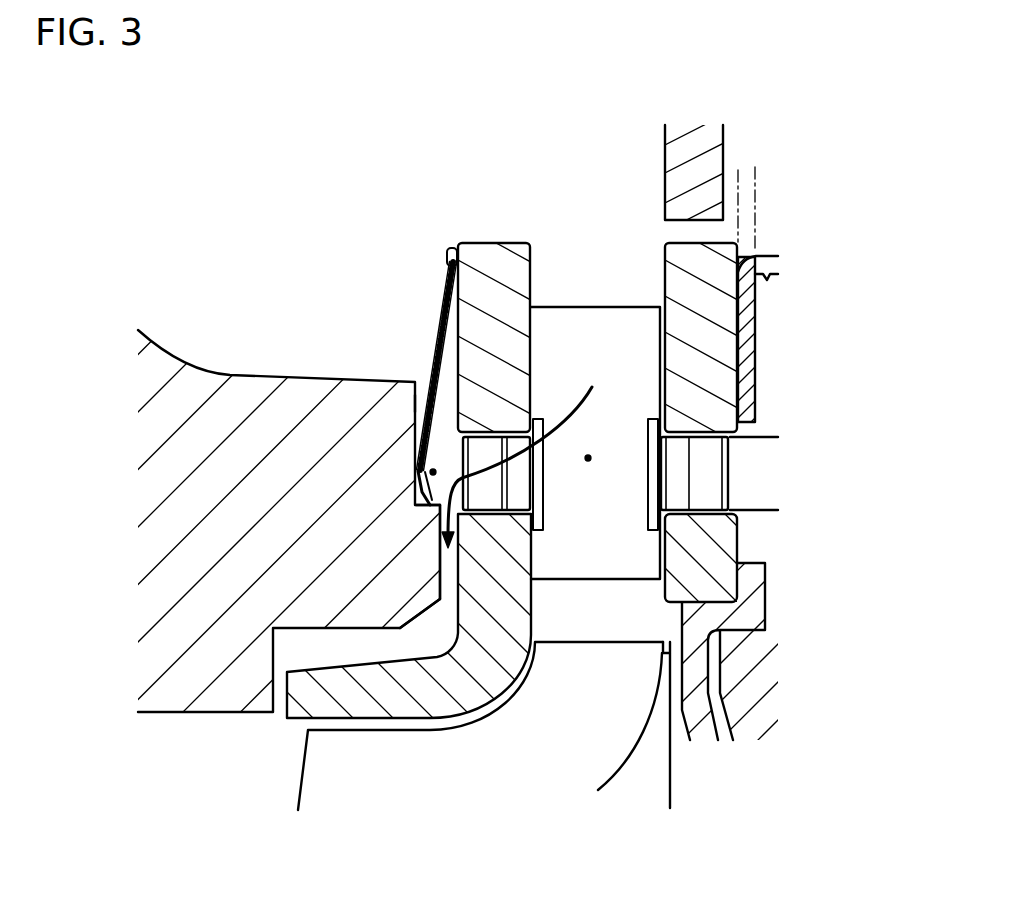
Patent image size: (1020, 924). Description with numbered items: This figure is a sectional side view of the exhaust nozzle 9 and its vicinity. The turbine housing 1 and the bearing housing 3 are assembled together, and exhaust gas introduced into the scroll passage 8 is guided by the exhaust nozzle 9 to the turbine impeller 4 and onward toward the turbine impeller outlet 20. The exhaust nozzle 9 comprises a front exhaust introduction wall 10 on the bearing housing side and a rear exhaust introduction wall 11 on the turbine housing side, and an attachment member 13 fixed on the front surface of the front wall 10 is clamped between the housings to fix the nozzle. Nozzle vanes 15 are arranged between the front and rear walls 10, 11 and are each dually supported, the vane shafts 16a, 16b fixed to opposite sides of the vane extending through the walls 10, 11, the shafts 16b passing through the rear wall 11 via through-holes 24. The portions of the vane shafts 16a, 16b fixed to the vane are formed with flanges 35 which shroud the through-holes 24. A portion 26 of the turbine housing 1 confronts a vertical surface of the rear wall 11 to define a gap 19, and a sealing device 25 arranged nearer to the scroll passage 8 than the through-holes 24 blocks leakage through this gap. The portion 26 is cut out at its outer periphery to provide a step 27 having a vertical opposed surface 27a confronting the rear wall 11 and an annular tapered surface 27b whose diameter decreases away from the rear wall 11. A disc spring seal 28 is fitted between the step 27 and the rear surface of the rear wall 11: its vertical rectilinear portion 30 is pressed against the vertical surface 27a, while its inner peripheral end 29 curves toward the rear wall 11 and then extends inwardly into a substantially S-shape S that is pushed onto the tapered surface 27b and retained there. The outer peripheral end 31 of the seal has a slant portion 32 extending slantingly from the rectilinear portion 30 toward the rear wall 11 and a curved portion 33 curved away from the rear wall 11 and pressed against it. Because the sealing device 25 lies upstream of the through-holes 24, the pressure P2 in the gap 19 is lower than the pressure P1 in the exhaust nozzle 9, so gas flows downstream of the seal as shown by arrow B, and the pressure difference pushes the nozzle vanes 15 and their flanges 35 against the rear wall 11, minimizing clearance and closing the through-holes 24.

The turbine housing 1 is at (200, 383).
The bearing housing 3 is at (867, 395).
The turbine impeller 4 is at (315, 763).
The scroll passage 8 is at (273, 252).
The exhaust nozzle 9 is at (590, 200).
The front exhaust introduction wall 10 is at (673, 273).
The rear exhaust introduction wall 11 is at (488, 260).
The attachment member 13 is at (756, 330).
The nozzle vane 15 is at (573, 313).
The vane shaft 16a is at (707, 473).
The vane shaft 16b is at (517, 480).
The gap 19 is at (440, 570).
The turbine impeller outlet 20 is at (208, 803).
The through-hole 24 is at (485, 428).
The sealing device 25 is at (418, 296).
The portion 26 is at (438, 588).
The step 27 is at (403, 498).
The vertical opposed surface 27a is at (412, 403).
The annular tapered surface 27b is at (420, 517).
The disc spring seal 28 is at (433, 346).
The inner peripheral end 29 is at (427, 508).
The vertical rectilinear portion 30 is at (425, 458).
The outer peripheral end 31 is at (450, 247).
The slant portion 32 is at (432, 370).
The curved portion 33 is at (450, 283).
The flange 35 is at (648, 420).
The arrow B is at (597, 388).
The S-shape S is at (500, 421).
The pressure P1 is at (589, 462).
The pressure P2 is at (430, 472).